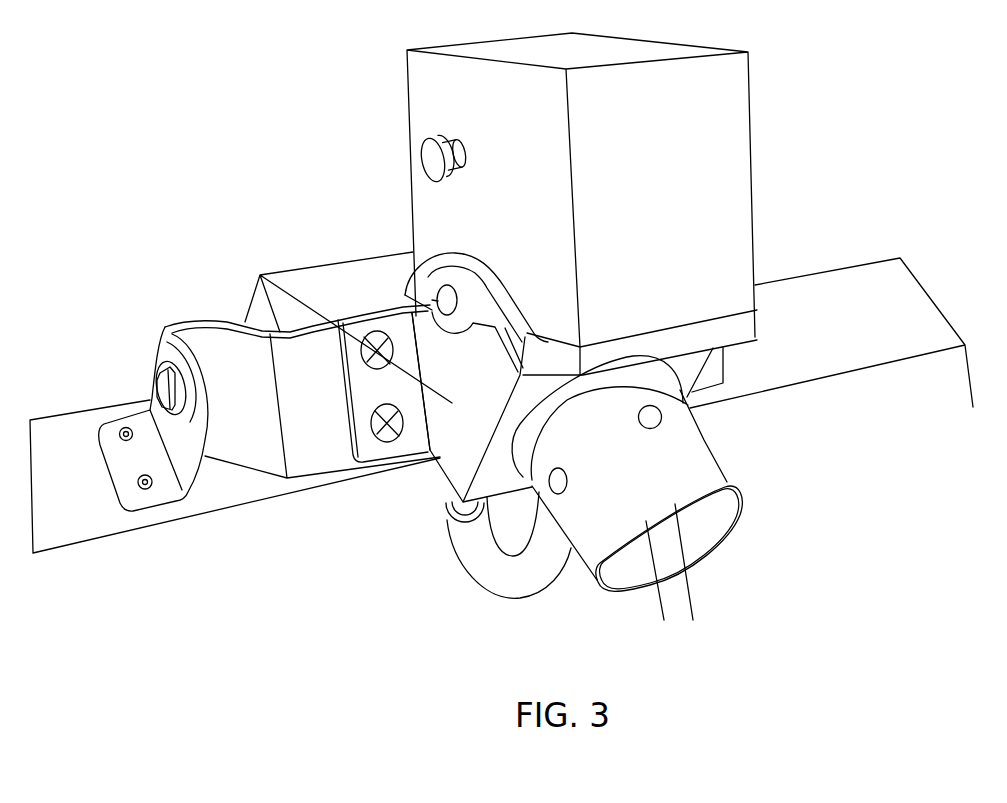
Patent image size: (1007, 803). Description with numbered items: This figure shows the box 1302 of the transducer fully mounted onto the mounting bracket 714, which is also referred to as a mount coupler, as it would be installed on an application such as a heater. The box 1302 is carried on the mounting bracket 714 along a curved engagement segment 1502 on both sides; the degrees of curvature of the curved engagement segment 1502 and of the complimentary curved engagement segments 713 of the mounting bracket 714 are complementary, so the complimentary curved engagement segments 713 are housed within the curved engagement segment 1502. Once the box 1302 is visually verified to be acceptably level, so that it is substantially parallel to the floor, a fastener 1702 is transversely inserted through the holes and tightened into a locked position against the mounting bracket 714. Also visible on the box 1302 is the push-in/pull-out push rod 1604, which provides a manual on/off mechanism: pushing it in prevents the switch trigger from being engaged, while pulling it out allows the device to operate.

The box 1302 is at (716, 107).
The push rod 1604 is at (430, 160).
The complimentary curved engagement segments 713 is at (427, 278).
The fastener 1702 is at (420, 284).
The curved engagement segment 1502 is at (400, 302).
The mounting bracket 714 is at (258, 274).